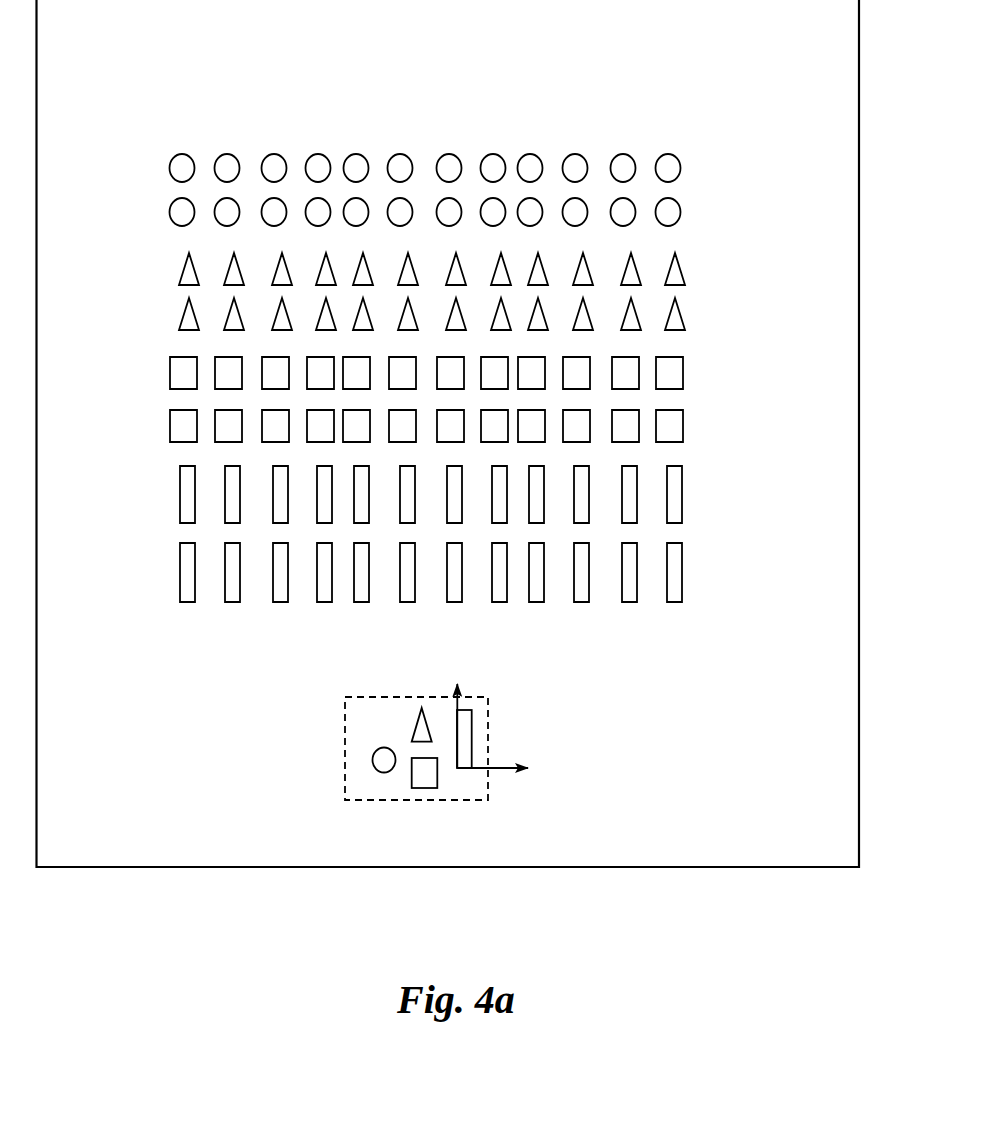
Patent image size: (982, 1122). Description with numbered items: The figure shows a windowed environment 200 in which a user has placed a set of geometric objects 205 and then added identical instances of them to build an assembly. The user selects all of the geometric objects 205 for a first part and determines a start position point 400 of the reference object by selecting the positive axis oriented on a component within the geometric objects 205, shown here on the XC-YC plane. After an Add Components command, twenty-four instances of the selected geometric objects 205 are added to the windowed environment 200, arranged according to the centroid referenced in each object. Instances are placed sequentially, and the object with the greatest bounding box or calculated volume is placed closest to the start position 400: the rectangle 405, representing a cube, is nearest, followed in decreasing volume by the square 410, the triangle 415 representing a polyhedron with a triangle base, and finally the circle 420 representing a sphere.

The windowed environment 200 is at (448, 870).
The geometric objects 205 is at (345, 748).
The start position point 400 is at (458, 776).
The rectangle 405 is at (683, 572).
The square 410 is at (168, 425).
The triangle 415 is at (683, 313).
The circle 420 is at (178, 157).